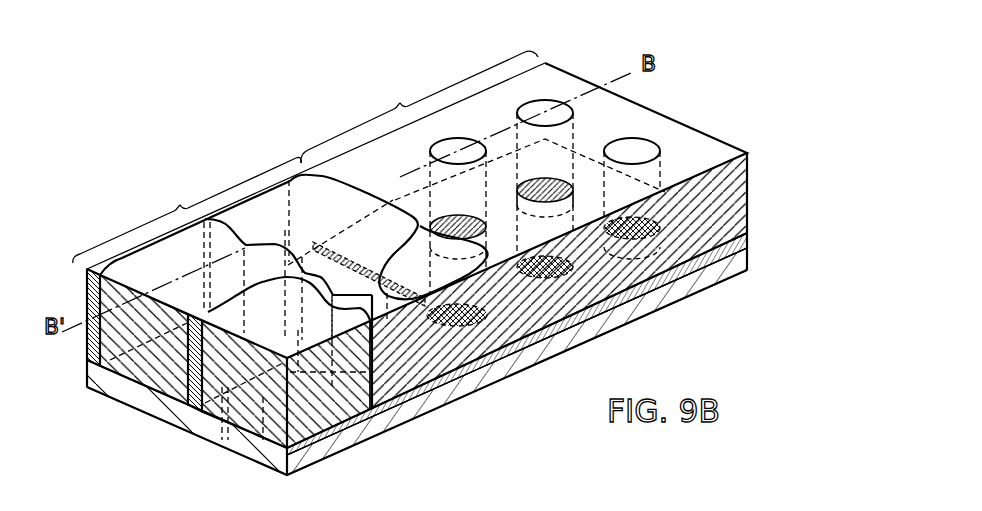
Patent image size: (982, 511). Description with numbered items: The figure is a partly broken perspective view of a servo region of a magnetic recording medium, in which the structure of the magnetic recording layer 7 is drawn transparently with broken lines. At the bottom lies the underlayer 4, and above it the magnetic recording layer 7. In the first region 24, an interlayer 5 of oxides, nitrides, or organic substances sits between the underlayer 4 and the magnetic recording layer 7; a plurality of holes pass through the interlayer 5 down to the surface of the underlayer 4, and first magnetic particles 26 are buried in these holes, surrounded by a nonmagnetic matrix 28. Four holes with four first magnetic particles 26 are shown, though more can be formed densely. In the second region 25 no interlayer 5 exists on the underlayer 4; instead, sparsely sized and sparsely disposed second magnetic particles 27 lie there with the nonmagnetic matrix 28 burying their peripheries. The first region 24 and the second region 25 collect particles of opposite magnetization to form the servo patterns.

The underlayer 4 is at (88, 373).
The interlayer 5 is at (748, 237).
The magnetic recording layer 7 is at (748, 188).
The first region 24 is at (400, 104).
The second region 25 is at (180, 206).
The first magnetic particles 26 is at (635, 148).
The second magnetic particles 27 is at (143, 270).
The nonmagnetic matrix 28 is at (175, 243).